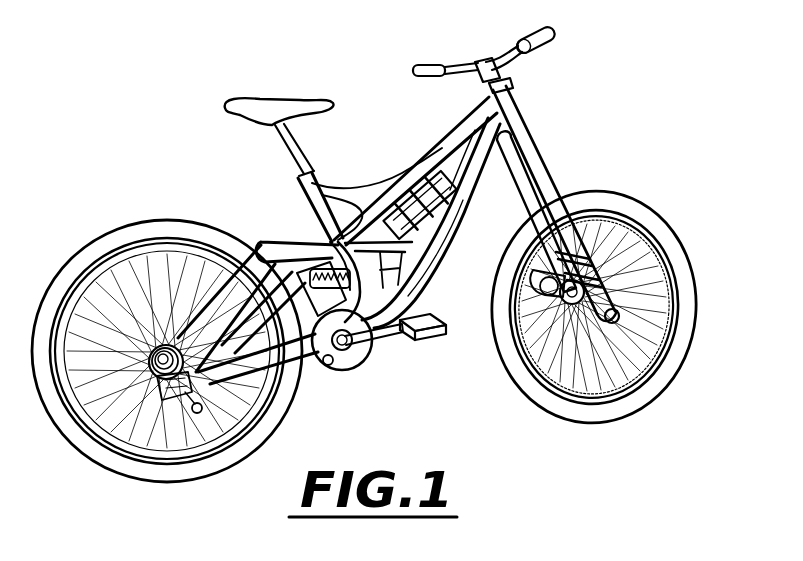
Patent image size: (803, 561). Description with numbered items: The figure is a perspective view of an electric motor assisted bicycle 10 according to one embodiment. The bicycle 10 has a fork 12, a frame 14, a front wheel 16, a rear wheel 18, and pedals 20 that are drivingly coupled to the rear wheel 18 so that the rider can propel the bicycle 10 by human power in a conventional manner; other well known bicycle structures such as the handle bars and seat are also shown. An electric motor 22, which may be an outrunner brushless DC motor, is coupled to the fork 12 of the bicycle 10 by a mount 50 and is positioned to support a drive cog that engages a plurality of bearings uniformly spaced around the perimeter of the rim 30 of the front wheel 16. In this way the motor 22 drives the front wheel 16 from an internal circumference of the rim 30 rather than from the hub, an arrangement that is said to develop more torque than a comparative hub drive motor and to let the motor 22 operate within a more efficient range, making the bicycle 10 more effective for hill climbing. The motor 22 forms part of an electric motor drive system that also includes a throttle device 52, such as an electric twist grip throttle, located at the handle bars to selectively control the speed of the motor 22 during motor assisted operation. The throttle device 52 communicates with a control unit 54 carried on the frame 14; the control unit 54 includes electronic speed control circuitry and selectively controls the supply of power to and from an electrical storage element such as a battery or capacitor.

The electric motor assisted bicycle 10 is at (151, 76).
The fork 12 is at (529, 143).
The frame 14 is at (442, 145).
The front wheel 16 is at (678, 234).
The rear wheel 18 is at (88, 252).
The pedals 20 is at (401, 335).
The electric motor 22 is at (561, 304).
The rim 30 is at (679, 295).
The mount 50 is at (588, 263).
The throttle device 52 is at (558, 33).
The control unit 54 is at (396, 168).